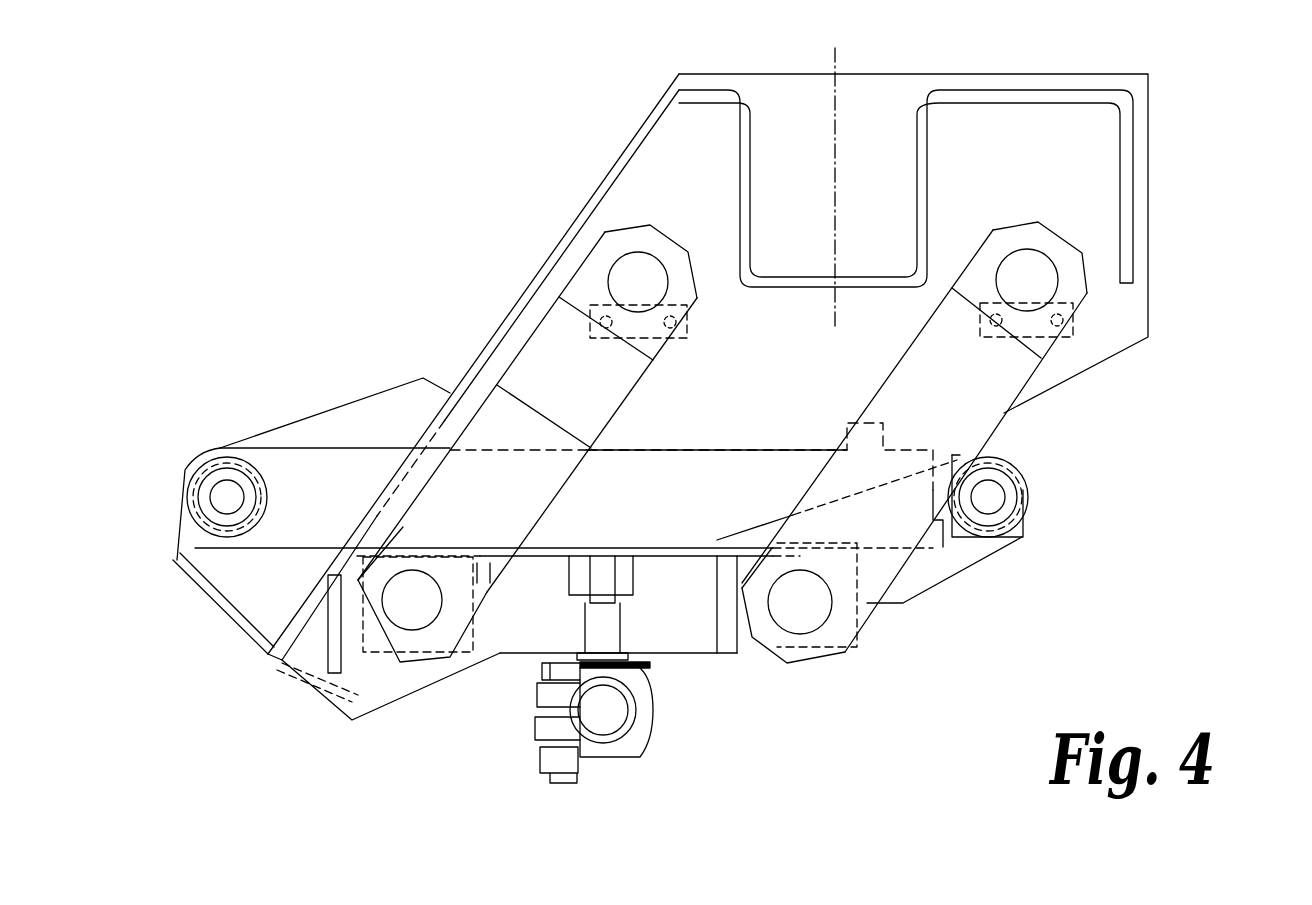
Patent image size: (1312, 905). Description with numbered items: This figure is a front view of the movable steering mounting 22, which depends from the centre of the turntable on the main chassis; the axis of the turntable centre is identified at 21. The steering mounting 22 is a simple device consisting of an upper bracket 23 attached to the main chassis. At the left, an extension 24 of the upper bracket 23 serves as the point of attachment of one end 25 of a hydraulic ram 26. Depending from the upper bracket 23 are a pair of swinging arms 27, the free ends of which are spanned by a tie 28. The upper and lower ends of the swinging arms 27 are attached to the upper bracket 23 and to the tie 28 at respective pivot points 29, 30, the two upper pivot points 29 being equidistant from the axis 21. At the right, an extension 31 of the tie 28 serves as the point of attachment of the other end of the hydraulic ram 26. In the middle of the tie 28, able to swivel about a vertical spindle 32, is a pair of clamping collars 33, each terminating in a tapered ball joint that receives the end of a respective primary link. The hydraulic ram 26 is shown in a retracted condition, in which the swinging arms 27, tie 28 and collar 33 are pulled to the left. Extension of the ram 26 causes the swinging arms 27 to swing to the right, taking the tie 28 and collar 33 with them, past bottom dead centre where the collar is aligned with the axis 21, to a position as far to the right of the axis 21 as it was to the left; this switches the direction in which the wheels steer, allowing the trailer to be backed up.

The axis of the turntable centre 21 is at (840, 140).
The steering mounting 22 is at (1185, 301).
The upper bracket 23 is at (1135, 90).
The extension 24 is at (350, 418).
The end 25 is at (275, 538).
The hydraulic ram 26 is at (705, 472).
The swinging arms 27 is at (537, 352).
The tie 28 is at (697, 636).
The upper pivot points 29 is at (640, 280).
The lower pivot points 30 is at (433, 607).
The extension 31 is at (950, 578).
The vertical spindle 32 is at (604, 623).
The clamping collars 33 is at (634, 740).